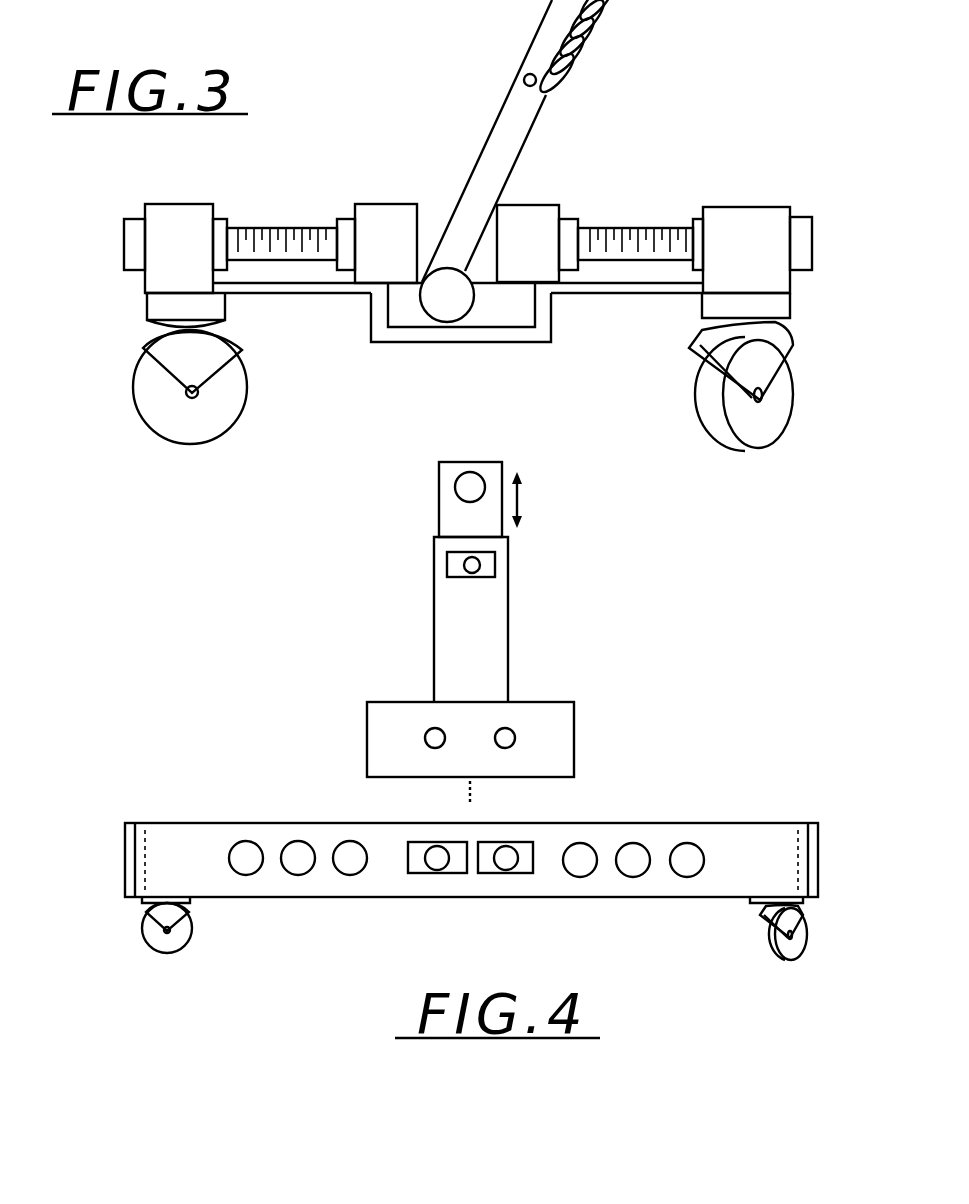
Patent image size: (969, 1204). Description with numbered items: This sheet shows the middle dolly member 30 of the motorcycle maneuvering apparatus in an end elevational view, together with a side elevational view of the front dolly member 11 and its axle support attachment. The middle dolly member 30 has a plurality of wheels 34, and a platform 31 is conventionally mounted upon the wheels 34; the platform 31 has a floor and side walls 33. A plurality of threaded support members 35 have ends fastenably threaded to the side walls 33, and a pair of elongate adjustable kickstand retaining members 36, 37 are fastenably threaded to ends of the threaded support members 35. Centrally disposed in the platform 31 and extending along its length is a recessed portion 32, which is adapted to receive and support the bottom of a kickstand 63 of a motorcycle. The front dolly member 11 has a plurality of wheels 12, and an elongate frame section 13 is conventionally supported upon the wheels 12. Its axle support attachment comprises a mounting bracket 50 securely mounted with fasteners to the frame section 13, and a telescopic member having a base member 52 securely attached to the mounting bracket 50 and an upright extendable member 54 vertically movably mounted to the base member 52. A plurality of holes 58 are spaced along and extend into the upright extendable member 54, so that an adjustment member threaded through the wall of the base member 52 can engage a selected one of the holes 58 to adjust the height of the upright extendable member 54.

In FIG. 4, the front dolly member 11 is at (122, 757).
In FIG. 4, the wheels 12 is at (153, 945).
In FIG. 4, the elongate frame section 13 is at (597, 893).
In FIG. 3, the middle dolly member 30 is at (369, 192).
In FIG. 3, the platform 31 is at (305, 293).
In FIG. 3, the recessed portion 32 is at (502, 317).
In FIG. 3, the side walls 33 is at (157, 275).
In FIG. 3, the wheels 34 is at (173, 427).
In FIG. 3, the threaded support members 35 is at (283, 227).
In FIG. 3, the elongate adjustable kickstand retaining member 36 is at (445, 172).
In FIG. 3, the elongate adjustable kickstand retaining member 37 is at (537, 265).
In FIG. 4, the mounting bracket 50 is at (573, 738).
In FIG. 4, the base member 52 is at (482, 643).
In FIG. 4, the upright extendable member 54 is at (502, 467).
In FIG. 4, the holes 58 is at (455, 487).
In FIG. 3, the kickstand 63 is at (507, 160).